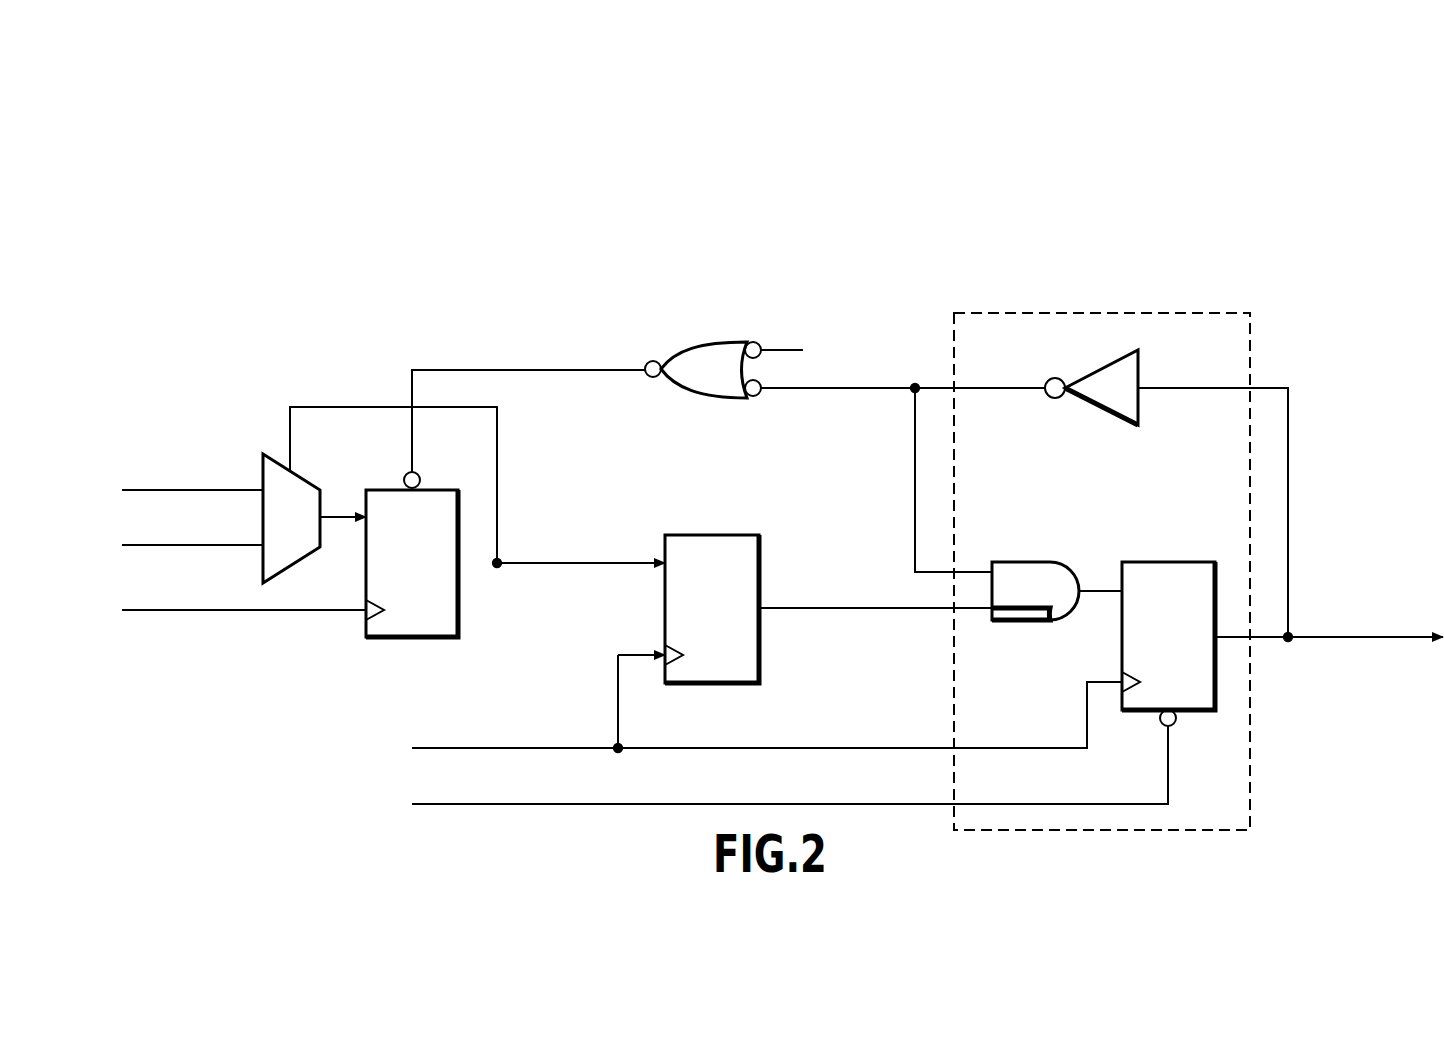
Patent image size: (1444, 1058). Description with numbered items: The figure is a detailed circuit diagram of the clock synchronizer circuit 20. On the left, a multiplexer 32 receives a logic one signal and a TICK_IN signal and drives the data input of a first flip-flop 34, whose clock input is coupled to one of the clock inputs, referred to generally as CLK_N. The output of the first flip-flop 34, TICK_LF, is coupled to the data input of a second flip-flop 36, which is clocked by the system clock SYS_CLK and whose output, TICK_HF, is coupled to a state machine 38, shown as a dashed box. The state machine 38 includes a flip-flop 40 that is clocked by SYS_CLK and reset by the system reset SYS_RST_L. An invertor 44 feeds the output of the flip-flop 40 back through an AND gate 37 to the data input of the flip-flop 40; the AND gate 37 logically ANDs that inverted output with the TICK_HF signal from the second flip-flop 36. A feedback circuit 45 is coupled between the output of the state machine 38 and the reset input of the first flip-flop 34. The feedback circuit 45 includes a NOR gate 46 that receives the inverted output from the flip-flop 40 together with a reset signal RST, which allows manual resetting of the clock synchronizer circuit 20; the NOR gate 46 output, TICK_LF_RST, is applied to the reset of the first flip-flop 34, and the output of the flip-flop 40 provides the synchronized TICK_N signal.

The clock synchronizer circuit 20 is at (1308, 182).
The multiplexer 32 is at (262, 472).
The first flip-flop 34 is at (413, 640).
The second flip-flop 36 is at (729, 535).
The AND gate 37 is at (1028, 562).
The state machine 38 is at (1203, 313).
The flip-flop 40 is at (1178, 562).
The invertor 44 is at (1095, 404).
The feedback circuit 45 is at (1023, 272).
The NOR gate 46 is at (728, 342).